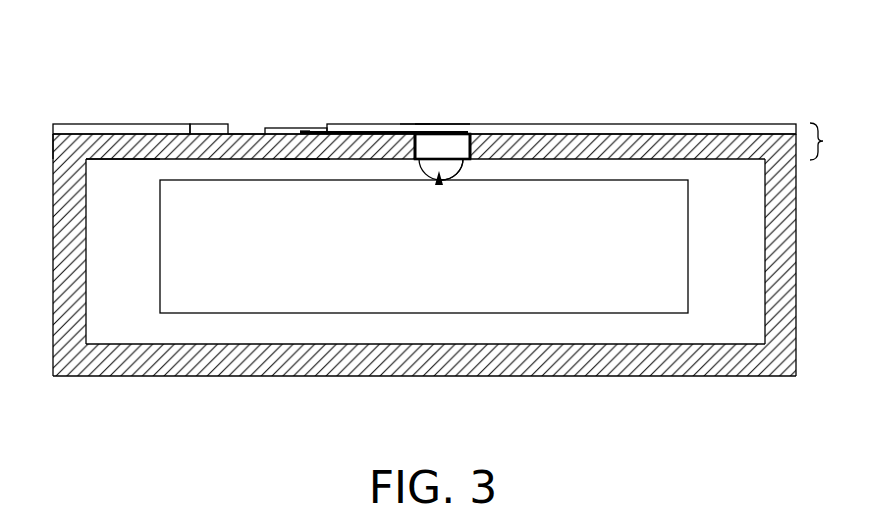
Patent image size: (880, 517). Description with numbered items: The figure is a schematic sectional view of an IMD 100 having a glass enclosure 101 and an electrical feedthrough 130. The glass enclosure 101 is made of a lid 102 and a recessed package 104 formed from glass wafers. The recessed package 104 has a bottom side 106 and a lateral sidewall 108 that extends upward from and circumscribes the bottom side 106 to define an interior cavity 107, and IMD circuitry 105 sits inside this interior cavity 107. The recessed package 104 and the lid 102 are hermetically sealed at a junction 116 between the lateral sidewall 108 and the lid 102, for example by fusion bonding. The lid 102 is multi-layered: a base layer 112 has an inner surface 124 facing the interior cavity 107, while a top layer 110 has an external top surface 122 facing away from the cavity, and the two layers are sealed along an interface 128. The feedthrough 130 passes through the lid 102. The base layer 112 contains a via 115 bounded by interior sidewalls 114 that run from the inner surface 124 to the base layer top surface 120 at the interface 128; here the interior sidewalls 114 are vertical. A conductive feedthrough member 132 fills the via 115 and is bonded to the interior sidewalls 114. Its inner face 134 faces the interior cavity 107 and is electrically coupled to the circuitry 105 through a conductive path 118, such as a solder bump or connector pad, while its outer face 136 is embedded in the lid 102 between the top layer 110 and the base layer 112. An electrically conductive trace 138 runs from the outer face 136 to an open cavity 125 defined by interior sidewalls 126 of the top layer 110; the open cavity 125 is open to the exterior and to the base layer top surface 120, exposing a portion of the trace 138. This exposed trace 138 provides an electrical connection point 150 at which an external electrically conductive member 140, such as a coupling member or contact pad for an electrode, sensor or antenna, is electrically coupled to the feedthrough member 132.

The IMD 100 is at (402, 33).
The glass enclosure 101 is at (688, 431).
The lid 102 is at (834, 141).
The recessed package 104 is at (267, 388).
The IMD circuitry 105 is at (515, 298).
The bottom side 106 is at (372, 376).
The interior cavity 107 is at (158, 330).
The lateral sidewall 108 is at (80, 278).
The top layer 110 is at (537, 124).
The base layer 112 is at (694, 158).
The interior sidewalls 114 is at (414, 145).
The via 115 is at (439, 185).
The junction 116 is at (54, 158).
The conductive path 118 is at (420, 167).
The base layer top surface 120 is at (246, 133).
The external top surface 122 is at (82, 124).
The inner surface 124 is at (102, 160).
The open cavity 125 is at (302, 86).
The interior sidewalls 126 is at (240, 127).
The interface 128 is at (190, 122).
The electrical feedthrough 130 is at (409, 73).
The feedthrough member 132 is at (471, 145).
The inner face 134 is at (463, 163).
The outer face 136 is at (457, 131).
The electrically conductive trace 138 is at (398, 128).
The external electrically conductive member 140 is at (303, 131).
The electrical connection point 150 is at (305, 159).